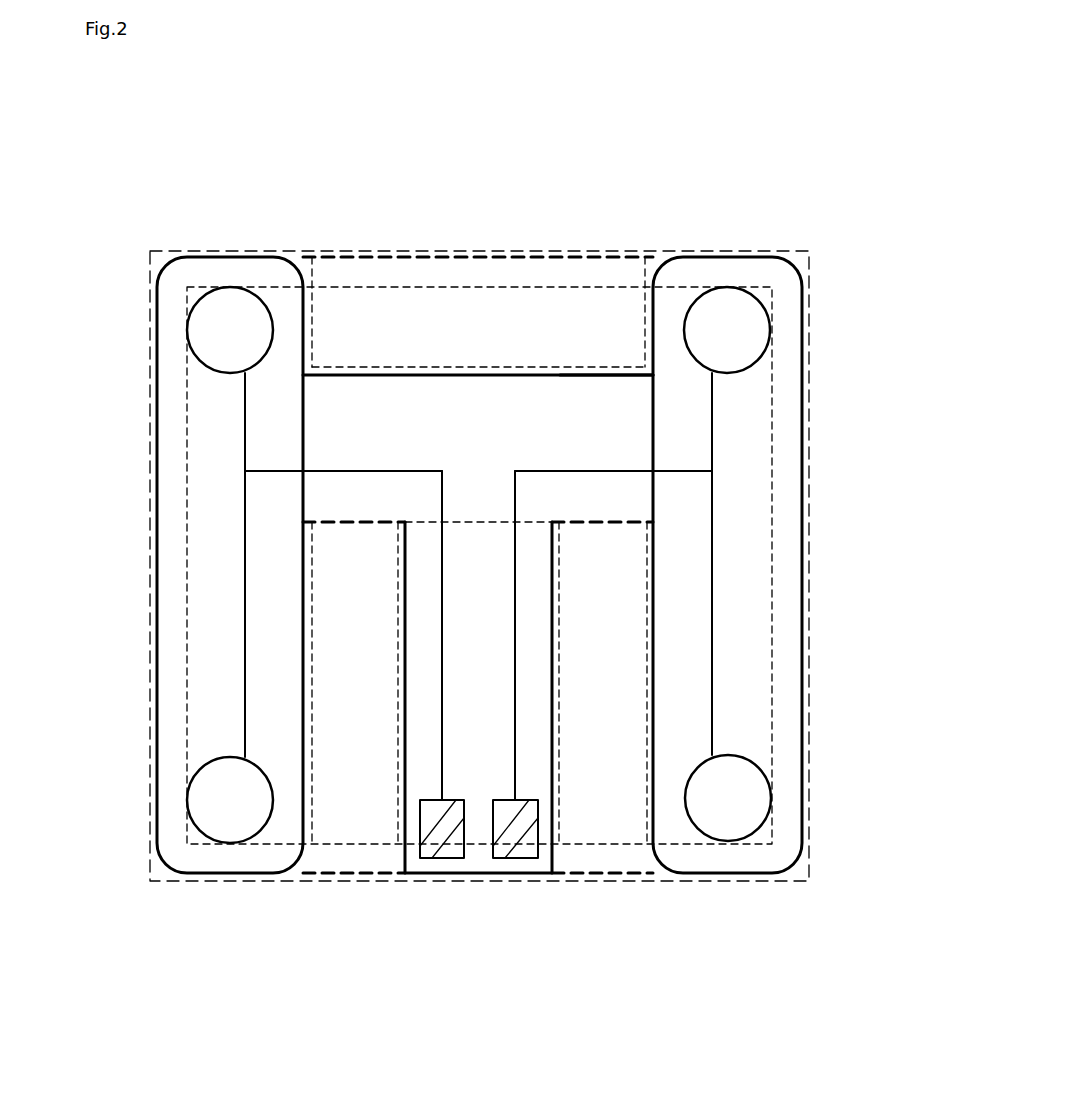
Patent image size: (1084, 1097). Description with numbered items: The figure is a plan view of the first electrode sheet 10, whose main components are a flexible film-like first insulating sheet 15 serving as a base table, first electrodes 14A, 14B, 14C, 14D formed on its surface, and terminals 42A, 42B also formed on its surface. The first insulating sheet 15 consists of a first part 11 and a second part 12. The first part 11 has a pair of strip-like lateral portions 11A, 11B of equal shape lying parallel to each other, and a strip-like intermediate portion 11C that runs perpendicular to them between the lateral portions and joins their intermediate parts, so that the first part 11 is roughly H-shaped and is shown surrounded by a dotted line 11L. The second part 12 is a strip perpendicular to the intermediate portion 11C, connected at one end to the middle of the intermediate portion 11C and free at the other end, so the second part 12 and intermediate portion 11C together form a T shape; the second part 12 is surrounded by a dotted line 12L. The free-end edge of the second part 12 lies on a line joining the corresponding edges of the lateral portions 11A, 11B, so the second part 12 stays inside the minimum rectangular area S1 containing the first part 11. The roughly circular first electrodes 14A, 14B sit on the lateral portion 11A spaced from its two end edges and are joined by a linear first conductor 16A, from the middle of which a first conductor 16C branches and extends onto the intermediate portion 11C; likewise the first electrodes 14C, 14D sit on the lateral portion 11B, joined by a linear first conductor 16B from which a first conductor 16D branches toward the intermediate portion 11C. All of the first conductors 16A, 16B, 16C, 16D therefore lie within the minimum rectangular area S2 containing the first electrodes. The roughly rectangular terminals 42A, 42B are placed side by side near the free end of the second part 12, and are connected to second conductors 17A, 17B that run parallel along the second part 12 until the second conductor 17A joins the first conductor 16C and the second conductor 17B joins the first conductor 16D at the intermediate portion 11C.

The first electrode sheet 10 is at (697, 216).
The first part 11 is at (452, 371).
The lateral portion 11A is at (288, 632).
The lateral portion 11B is at (762, 558).
The intermediate portion 11C is at (330, 420).
The dotted line 11L is at (507, 368).
The second part 12 is at (545, 772).
The dotted line 12L is at (562, 763).
The first electrode 14A is at (232, 812).
The first electrode 14B is at (252, 310).
The first electrode 14C is at (720, 820).
The first electrode 14D is at (757, 315).
The first insulating sheet 15 is at (575, 373).
The first conductor 16A is at (247, 680).
The first conductor 16B is at (712, 543).
The first conductor 16C is at (327, 468).
The first conductor 16D is at (637, 467).
The second conductor 17A is at (442, 610).
The second conductor 17B is at (515, 603).
The terminal 42A is at (435, 838).
The terminal 42B is at (516, 837).
The minimum rectangular area S1 is at (423, 251).
The minimum rectangular area S2 is at (333, 286).